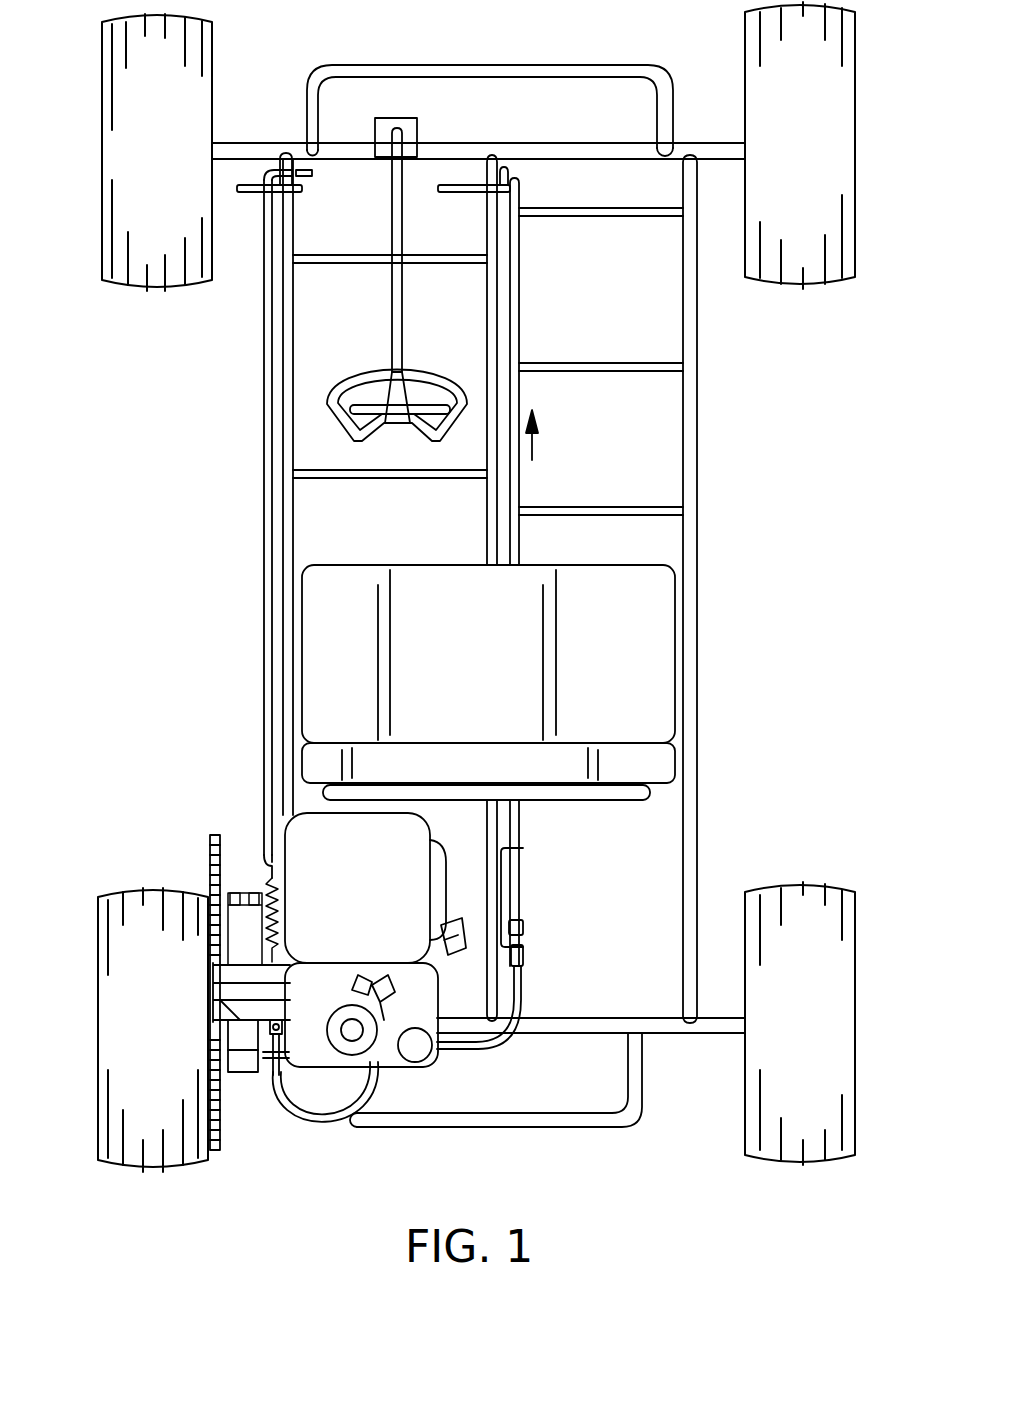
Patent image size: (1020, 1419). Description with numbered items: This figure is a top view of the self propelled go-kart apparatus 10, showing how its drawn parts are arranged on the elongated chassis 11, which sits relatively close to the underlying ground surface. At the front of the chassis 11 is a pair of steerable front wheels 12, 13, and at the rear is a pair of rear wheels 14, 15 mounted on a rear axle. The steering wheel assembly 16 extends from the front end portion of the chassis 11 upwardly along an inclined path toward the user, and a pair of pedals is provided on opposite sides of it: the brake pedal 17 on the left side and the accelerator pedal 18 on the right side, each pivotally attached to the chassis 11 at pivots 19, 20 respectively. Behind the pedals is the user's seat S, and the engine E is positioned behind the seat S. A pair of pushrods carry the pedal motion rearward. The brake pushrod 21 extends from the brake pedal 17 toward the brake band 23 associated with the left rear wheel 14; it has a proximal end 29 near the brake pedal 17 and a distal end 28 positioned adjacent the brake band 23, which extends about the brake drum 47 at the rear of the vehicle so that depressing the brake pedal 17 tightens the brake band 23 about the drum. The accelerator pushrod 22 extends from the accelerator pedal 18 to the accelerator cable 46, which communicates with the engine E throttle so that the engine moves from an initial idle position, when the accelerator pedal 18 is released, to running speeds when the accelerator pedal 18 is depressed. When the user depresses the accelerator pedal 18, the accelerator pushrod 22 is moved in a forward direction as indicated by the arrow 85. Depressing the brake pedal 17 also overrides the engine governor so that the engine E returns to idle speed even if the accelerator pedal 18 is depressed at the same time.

The self propelled go-kart apparatus 10 is at (797, 525).
The chassis 11 is at (618, 457).
The front wheel 12 is at (98, 83).
The front wheel 13 is at (855, 62).
The left rear wheel 14 is at (150, 1170).
The rear wheel 15 is at (830, 1163).
The steering wheel assembly 16 is at (385, 365).
The brake pedal 17 is at (245, 185).
The accelerator pedal 18 is at (457, 186).
The pivot 19 is at (293, 196).
The pivot 20 is at (490, 200).
The brake pushrod 21 is at (266, 458).
The accelerator pushrod 22 is at (518, 342).
The brake band 23 is at (243, 1058).
The distal end 28 is at (265, 820).
The proximal end 29 is at (266, 237).
The accelerator cable 46 is at (523, 980).
The brake drum 47 is at (525, 955).
The arrow 85 is at (533, 440).
The seat S is at (637, 752).
The engine E is at (382, 948).